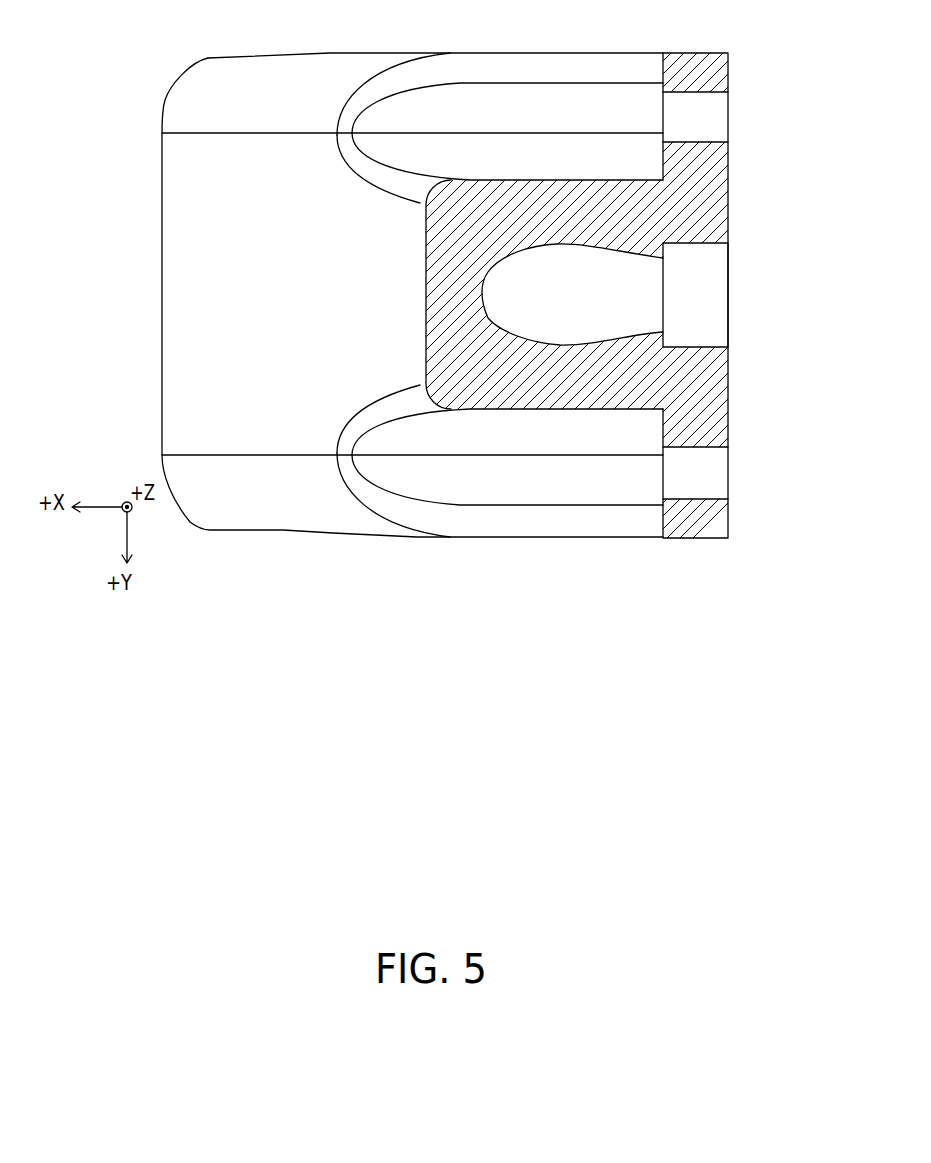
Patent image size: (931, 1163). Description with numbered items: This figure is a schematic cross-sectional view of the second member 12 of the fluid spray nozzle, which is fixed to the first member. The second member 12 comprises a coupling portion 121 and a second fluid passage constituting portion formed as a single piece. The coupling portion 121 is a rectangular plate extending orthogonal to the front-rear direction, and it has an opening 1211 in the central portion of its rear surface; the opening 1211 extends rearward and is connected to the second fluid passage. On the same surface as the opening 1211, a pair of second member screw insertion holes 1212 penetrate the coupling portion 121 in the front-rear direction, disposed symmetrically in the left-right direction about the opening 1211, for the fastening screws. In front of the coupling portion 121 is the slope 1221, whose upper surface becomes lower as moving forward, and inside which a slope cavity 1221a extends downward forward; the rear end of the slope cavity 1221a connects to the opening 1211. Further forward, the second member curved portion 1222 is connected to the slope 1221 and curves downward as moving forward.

The second member 12 is at (465, 294).
The coupling portion 121 is at (465, 317).
The opening 1211 is at (707, 292).
The second member screw insertion holes 1212 is at (707, 117).
The slope 1221 is at (465, 295).
The slope cavity 1221a is at (490, 318).
The second member curved portion 1222 is at (175, 328).